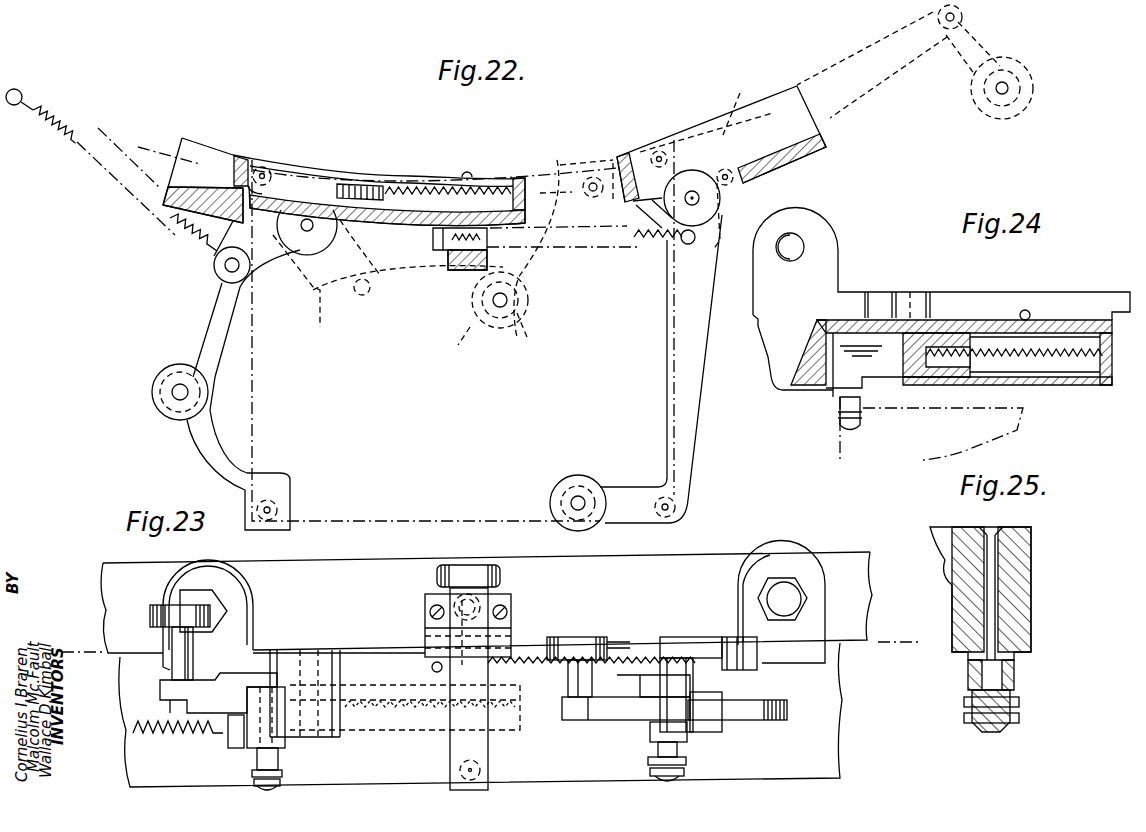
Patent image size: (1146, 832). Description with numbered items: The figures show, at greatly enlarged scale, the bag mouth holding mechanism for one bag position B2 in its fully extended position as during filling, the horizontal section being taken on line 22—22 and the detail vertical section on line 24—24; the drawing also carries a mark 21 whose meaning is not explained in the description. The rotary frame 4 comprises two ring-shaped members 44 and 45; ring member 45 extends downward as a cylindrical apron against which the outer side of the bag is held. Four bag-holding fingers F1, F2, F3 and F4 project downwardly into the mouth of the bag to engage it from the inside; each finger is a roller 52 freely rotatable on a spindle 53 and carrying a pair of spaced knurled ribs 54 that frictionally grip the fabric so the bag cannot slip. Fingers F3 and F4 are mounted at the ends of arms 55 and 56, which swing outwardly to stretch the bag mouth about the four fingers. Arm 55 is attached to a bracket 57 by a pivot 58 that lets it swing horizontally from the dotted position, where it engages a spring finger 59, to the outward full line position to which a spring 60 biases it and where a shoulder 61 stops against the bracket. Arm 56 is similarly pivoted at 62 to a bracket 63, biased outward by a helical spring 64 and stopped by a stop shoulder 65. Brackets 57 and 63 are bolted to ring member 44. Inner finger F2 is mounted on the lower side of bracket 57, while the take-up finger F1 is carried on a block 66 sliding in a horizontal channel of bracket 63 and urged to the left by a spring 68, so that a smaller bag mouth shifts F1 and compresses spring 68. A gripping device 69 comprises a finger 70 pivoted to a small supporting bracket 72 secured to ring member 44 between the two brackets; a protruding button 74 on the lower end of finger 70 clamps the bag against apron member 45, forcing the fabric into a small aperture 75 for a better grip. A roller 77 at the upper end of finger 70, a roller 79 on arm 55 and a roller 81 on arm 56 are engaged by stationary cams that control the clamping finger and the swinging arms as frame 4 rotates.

In FIG. 22, the rotary frame 4 is at (842, 147).
In FIG. 23, the rotary frame 4 is at (820, 543).
In FIG. 22, the roller (dashed position) 21 is at (520, 326).
In FIG. 23, the section line 22— 22 is at (80, 646).
In FIG. 22, the section line 24— 24 is at (163, 156).
In FIG. 23, the ring member 44 is at (643, 543).
In FIG. 23, the ring member 45 is at (827, 741).
In FIG. 25, the roller 52 is at (1016, 688).
In FIG. 25, the spindle 53 is at (968, 678).
In FIG. 25, the knurled ribs 54 is at (1021, 718).
In FIG. 23, the knurled ribs 54 is at (254, 773).
In FIG. 22, the arm 55 is at (665, 392).
In FIG. 23, the arm 55 is at (602, 713).
In FIG. 22, the arm 56 is at (208, 447).
In FIG. 23, the arm 56 is at (223, 707).
In FIG. 22, the bracket 57 is at (778, 100).
In FIG. 23, the bracket 57 is at (765, 572).
In FIG. 22, the pivot 58 is at (700, 198).
In FIG. 23, the pivot 58 is at (683, 645).
In FIG. 22, the spring finger 59 is at (656, 134).
In FIG. 23, the spring finger 59 is at (772, 723).
In FIG. 22, the spring 60 is at (634, 246).
In FIG. 23, the spring 60 is at (620, 677).
In FIG. 22, the shoulder 61 is at (640, 207).
In FIG. 22, the pivot 62 is at (305, 232).
In FIG. 23, the pivot 62 is at (318, 650).
In FIG. 22, the bracket 63 is at (211, 155).
In FIG. 24, the bracket 63 is at (817, 279).
In FIG. 23, the bracket 63 is at (238, 622).
In FIG. 22, the helical spring 64 is at (221, 228).
In FIG. 23, the helical spring 64 is at (178, 746).
In FIG. 22, the stop shoulder 65 is at (214, 270).
In FIG. 22, the block 66 is at (332, 178).
In FIG. 24, the block 66 is at (887, 367).
In FIG. 23, the block 66 is at (358, 737).
In FIG. 22, the spring 68 is at (413, 188).
In FIG. 24, the spring 68 is at (993, 360).
In FIG. 23, the spring 68 is at (398, 737).
In FIG. 23, the gripping device 69 is at (473, 635).
In FIG. 22, the finger 70 is at (473, 272).
In FIG. 23, the finger 70 is at (450, 749).
In FIG. 23, the supporting bracket 72 is at (430, 618).
In FIG. 23, the button 74 is at (482, 776).
In FIG. 23, the aperture 75 is at (480, 762).
In FIG. 23, the roller 77 is at (500, 576).
In FIG. 22, the roller 79 is at (566, 483).
In FIG. 23, the roller 79 is at (582, 645).
In FIG. 22, the roller 81 is at (151, 393).
In FIG. 23, the roller 81 is at (160, 617).
In FIG. 22, the bag-holding finger F1 is at (265, 168).
In FIG. 24, the bag-holding finger F1 is at (836, 414).
In FIG. 22, the bag-holding finger F2 is at (656, 152).
In FIG. 22, the bag-holding finger F3 is at (657, 493).
In FIG. 23, the bag-holding finger F3 is at (657, 756).
In FIG. 22, the bag-holding finger F4 is at (281, 510).
In FIG. 23, the bag-holding finger F4 is at (280, 772).
In FIG. 22, the bag position B2 is at (462, 519).
In FIG. 24, the bag position B2 is at (1026, 433).